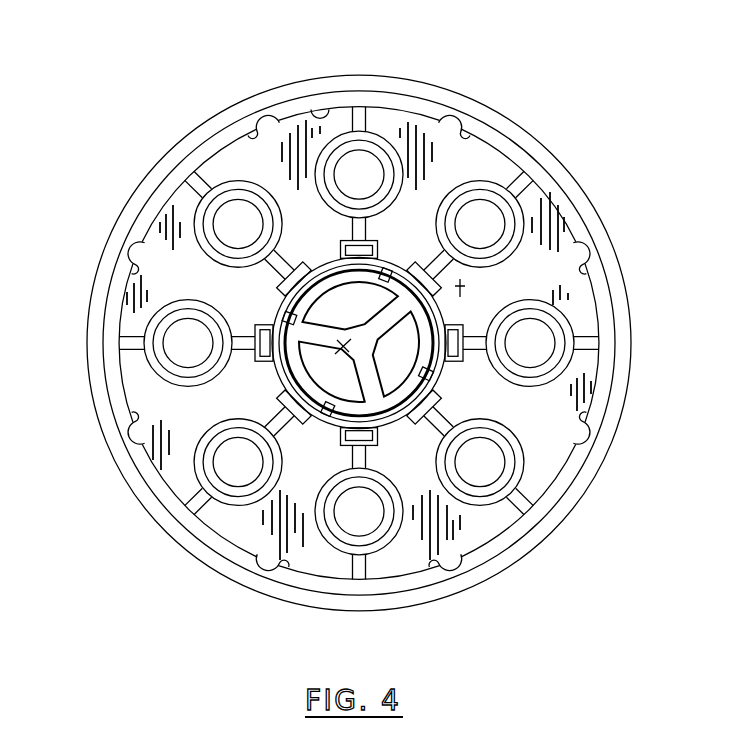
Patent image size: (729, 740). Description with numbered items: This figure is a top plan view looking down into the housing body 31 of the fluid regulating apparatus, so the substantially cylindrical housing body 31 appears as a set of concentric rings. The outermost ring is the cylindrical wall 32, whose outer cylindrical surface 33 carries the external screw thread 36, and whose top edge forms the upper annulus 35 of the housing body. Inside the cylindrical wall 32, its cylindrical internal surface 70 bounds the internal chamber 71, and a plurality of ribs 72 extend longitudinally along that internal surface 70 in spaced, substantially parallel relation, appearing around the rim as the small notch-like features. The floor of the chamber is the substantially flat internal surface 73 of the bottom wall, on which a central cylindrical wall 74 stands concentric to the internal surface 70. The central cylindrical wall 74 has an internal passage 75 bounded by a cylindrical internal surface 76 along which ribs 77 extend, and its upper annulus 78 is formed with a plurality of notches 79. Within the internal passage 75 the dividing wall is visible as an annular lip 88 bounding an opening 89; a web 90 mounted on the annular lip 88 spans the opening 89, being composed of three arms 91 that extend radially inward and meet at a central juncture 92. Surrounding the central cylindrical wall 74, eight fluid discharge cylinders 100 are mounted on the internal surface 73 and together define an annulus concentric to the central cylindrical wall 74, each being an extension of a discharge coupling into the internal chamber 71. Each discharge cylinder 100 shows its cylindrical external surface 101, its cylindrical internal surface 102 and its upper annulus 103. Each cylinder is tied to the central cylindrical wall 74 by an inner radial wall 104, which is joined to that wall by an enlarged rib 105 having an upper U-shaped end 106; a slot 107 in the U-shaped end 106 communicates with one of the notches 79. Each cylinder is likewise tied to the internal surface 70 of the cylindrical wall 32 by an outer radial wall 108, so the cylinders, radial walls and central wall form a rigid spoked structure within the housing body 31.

The housing body 31 is at (366, 313).
The cylindrical wall 32 is at (543, 181).
The outer cylindrical surface 33 is at (607, 272).
The upper annulus 35 is at (402, 343).
The external screw thread 36 is at (630, 388).
The cylindrical internal surface 70 is at (316, 106).
The internal chamber 71 is at (398, 118).
The ribs 72 is at (258, 128).
The internal surface 73 is at (556, 283).
The central cylindrical wall 74 is at (452, 376).
The internal passage 75 is at (344, 383).
The cylindrical internal surface 76 is at (461, 295).
The ribs 77 is at (391, 266).
The upper annulus 78 is at (389, 420).
The notches 79 is at (282, 284).
The annular lip 88 is at (297, 375).
The opening 89 is at (353, 338).
The web 90 is at (383, 374).
The arms 91 is at (383, 308).
The central juncture 92 is at (342, 350).
The fluid discharge cylinders 100 is at (525, 223).
The cylindrical external surface 101 is at (119, 329).
The cylindrical internal surface 102 is at (175, 372).
The upper annulus 103 is at (198, 388).
The inner radial wall 104 is at (270, 265).
The enlarged rib 105 is at (293, 247).
The upper U-shaped end 106 is at (415, 256).
The slot 107 is at (445, 254).
The outer radial wall 108 is at (184, 187).